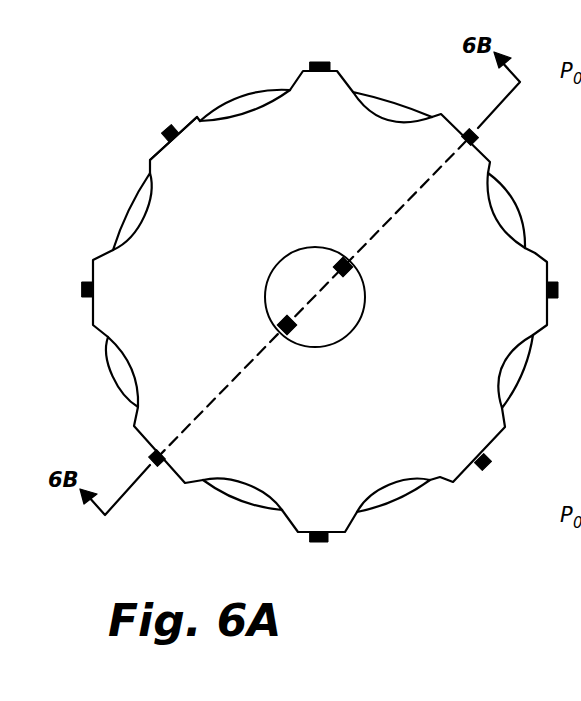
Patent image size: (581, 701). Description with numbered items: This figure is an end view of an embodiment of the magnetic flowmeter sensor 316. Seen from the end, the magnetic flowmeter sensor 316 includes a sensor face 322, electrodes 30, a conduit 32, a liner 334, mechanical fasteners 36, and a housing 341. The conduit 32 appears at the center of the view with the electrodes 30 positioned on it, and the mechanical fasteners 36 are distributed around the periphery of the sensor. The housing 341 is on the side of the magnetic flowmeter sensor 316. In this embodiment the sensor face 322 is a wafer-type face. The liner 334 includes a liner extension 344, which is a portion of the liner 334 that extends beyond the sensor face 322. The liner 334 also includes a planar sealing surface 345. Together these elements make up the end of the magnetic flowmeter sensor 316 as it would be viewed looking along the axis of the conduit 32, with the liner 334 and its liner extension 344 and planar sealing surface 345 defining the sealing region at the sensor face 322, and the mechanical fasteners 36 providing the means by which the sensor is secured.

The electrodes 30 is at (336, 264).
The conduit 32 is at (342, 333).
The mechanical fasteners 36 is at (321, 62).
The magnetic flowmeter sensor 316 is at (400, 86).
The sensor face 322 is at (398, 490).
The liner 334 is at (126, 210).
The housing 341 is at (216, 117).
The liner extension 344 is at (150, 158).
The planar sealing surface 345 is at (232, 142).